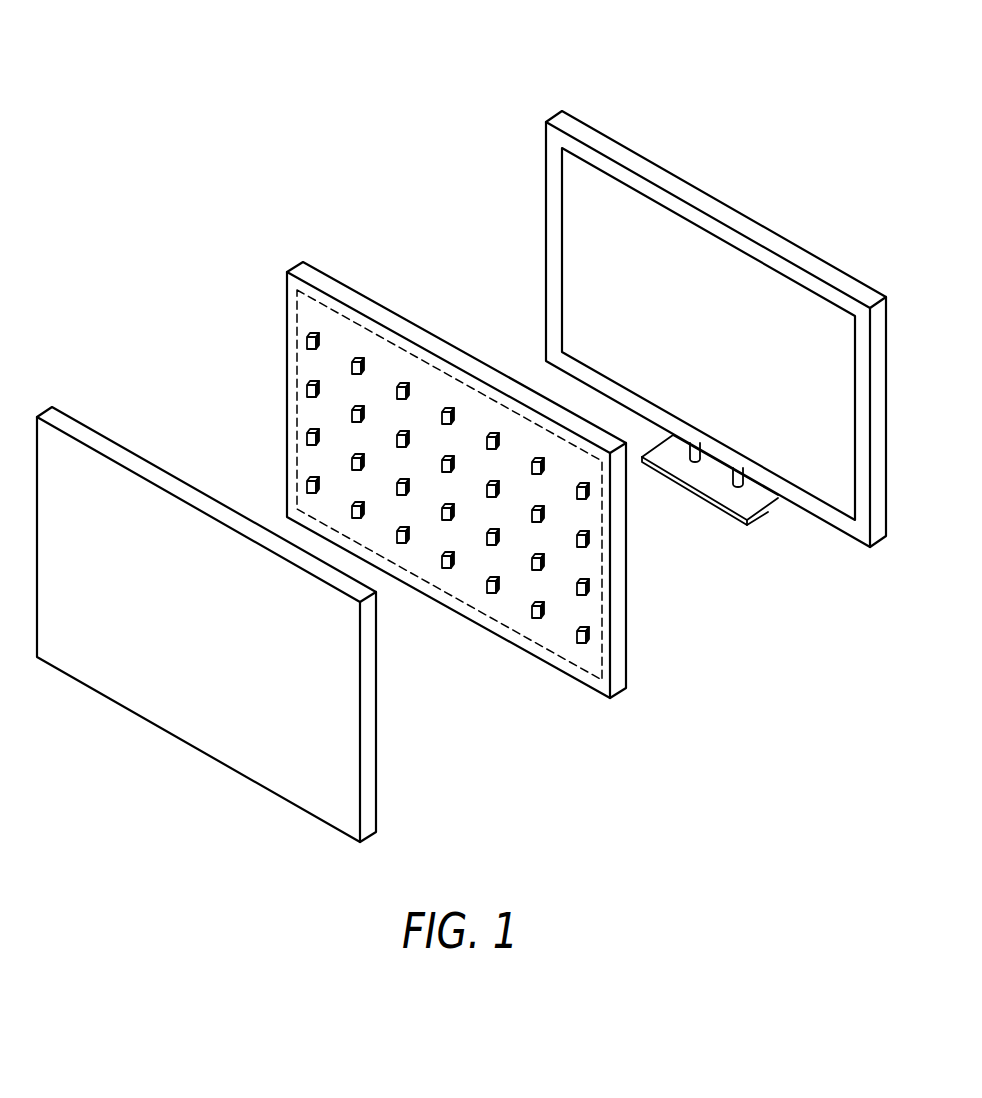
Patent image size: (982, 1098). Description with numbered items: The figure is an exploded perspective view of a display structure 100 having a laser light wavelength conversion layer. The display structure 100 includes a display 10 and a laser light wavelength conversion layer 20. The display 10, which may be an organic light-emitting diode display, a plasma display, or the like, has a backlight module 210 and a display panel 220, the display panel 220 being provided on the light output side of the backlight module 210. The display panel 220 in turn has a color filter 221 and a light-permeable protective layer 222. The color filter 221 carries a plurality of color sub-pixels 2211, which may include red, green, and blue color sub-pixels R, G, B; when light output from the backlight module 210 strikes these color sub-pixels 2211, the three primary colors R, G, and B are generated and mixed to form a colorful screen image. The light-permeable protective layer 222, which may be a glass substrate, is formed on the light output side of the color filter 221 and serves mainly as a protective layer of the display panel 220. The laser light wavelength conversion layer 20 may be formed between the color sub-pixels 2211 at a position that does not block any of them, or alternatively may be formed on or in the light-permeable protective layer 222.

The display structure 100 is at (779, 35).
The display 10 is at (127, 182).
The backlight module 210 is at (581, 211).
The display panel 220 is at (122, 245).
The color filter 221 is at (297, 290).
The light-permeable protective layer 222 is at (110, 438).
The laser light wavelength conversion layer 20 is at (602, 601).
The color sub-pixels 2211 is at (307, 342).
The red color sub-pixel R is at (490, 594).
The blue color sub-pixel B is at (533, 571).
The green color sub-pixel G is at (531, 620).